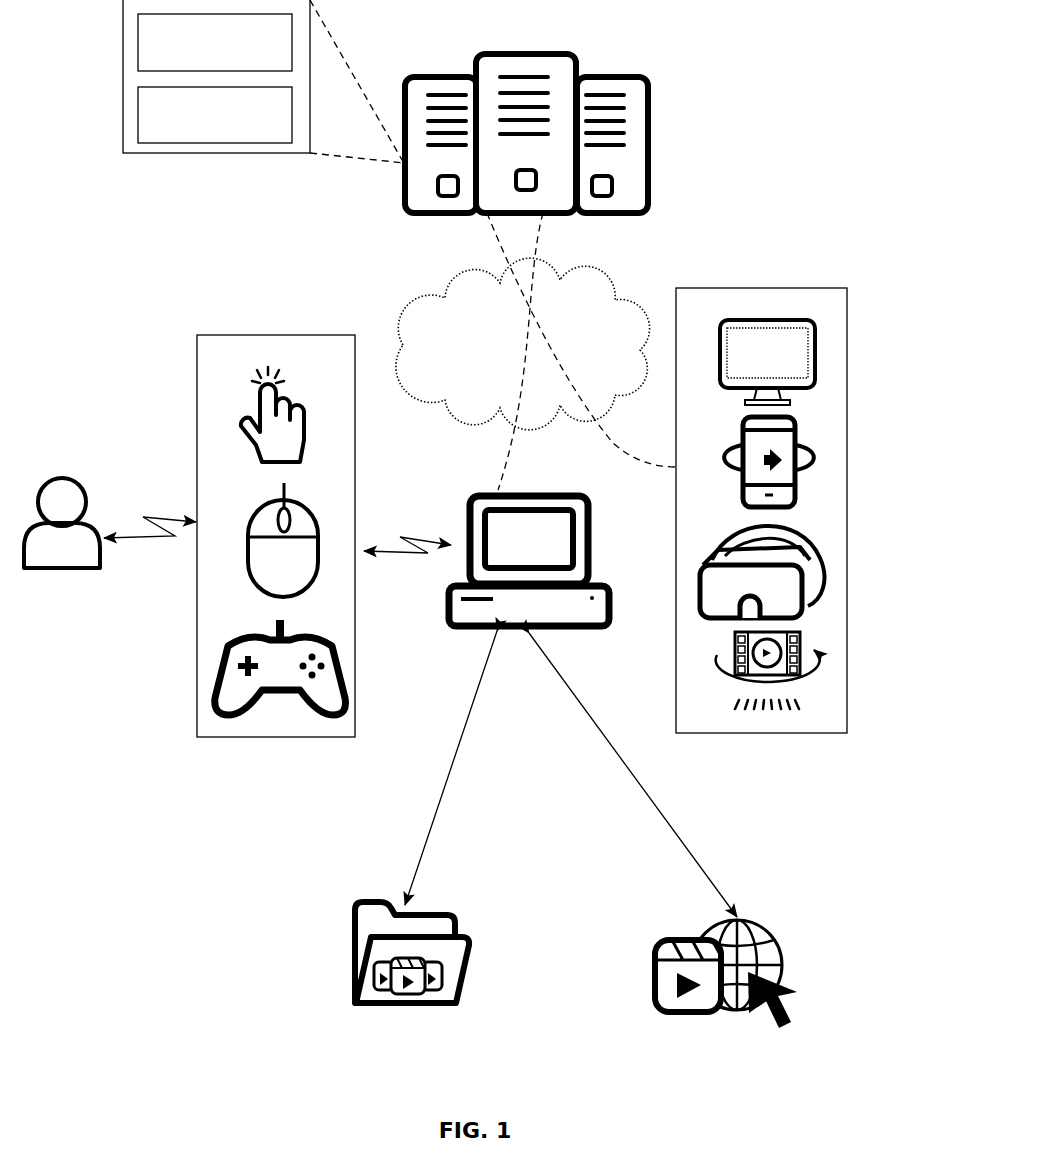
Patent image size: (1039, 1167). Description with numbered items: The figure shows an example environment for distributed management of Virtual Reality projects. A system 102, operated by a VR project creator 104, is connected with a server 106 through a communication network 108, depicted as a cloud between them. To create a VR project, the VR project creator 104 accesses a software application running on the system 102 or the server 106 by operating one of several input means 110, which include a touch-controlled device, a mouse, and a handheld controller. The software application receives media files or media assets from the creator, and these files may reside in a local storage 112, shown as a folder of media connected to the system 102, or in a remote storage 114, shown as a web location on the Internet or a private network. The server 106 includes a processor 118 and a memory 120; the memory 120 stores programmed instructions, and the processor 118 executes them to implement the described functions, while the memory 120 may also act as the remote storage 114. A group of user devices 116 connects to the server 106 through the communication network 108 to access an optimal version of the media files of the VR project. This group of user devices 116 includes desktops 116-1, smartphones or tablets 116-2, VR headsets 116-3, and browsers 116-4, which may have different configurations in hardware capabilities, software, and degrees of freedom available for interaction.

The system 102 is at (472, 492).
The VR project creator 104 is at (65, 478).
The server 106 is at (464, 106).
The communication network 108 is at (418, 316).
The input means 110 is at (264, 335).
The local storage 112 is at (350, 958).
The remote storage 114 is at (653, 943).
The group of user devices 116 is at (810, 485).
The desktops 116-1 is at (805, 320).
The smartphones or tablets 116-2 is at (800, 460).
The VR headsets 116-3 is at (820, 545).
The browsers 116-4 is at (812, 650).
The processor 118 is at (215, 42).
The memory 120 is at (215, 115).